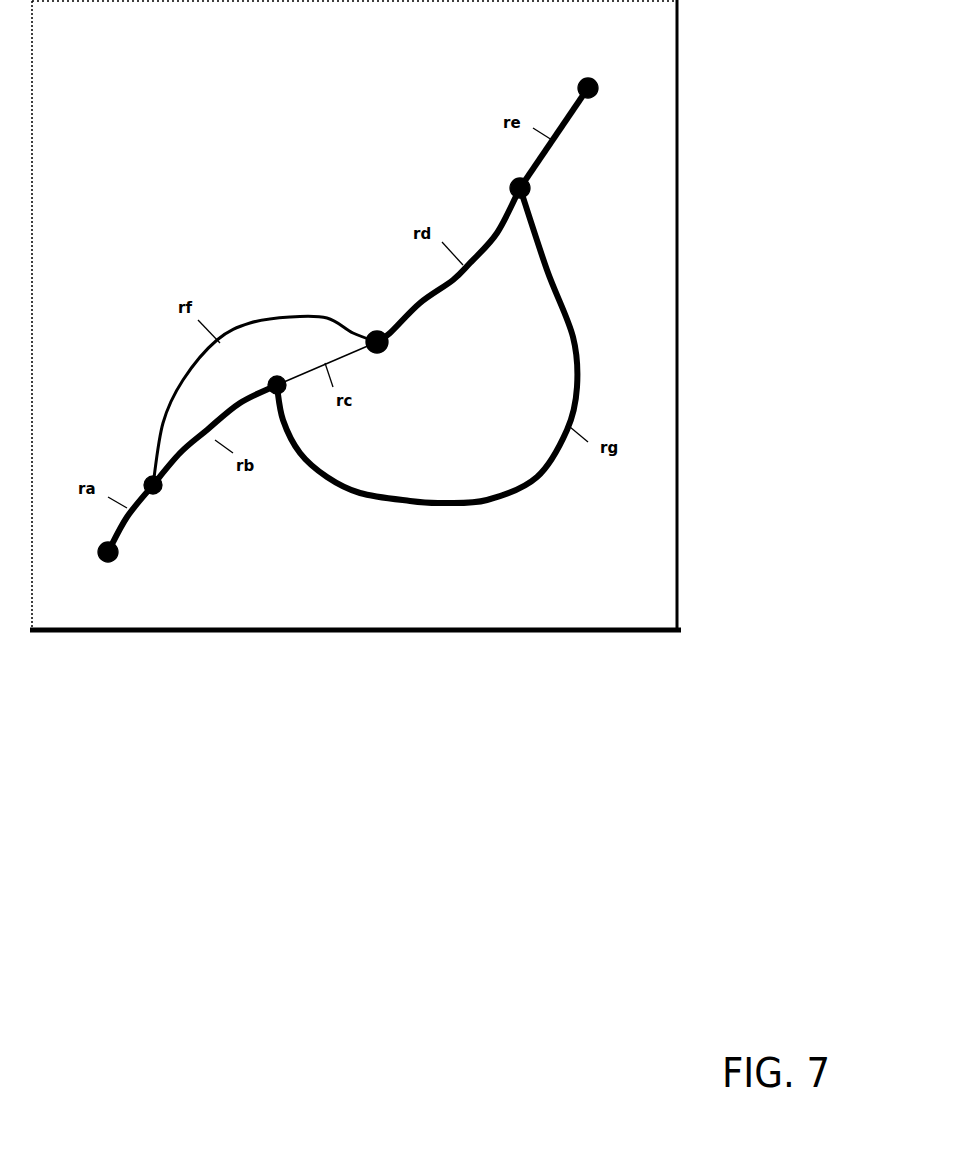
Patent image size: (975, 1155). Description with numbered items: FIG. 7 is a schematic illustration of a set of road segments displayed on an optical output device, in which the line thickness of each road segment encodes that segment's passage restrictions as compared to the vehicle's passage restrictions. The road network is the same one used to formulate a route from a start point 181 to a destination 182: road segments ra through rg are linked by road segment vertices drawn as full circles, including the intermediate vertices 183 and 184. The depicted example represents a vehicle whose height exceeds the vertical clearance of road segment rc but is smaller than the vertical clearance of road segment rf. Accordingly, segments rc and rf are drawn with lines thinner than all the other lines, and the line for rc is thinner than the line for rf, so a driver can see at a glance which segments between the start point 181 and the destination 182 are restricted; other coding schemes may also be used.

The start point 181 is at (118, 552).
The destination 182 is at (598, 88).
The intermediate point of path 183 is at (143, 477).
The intermediate point of path 184 is at (268, 395).